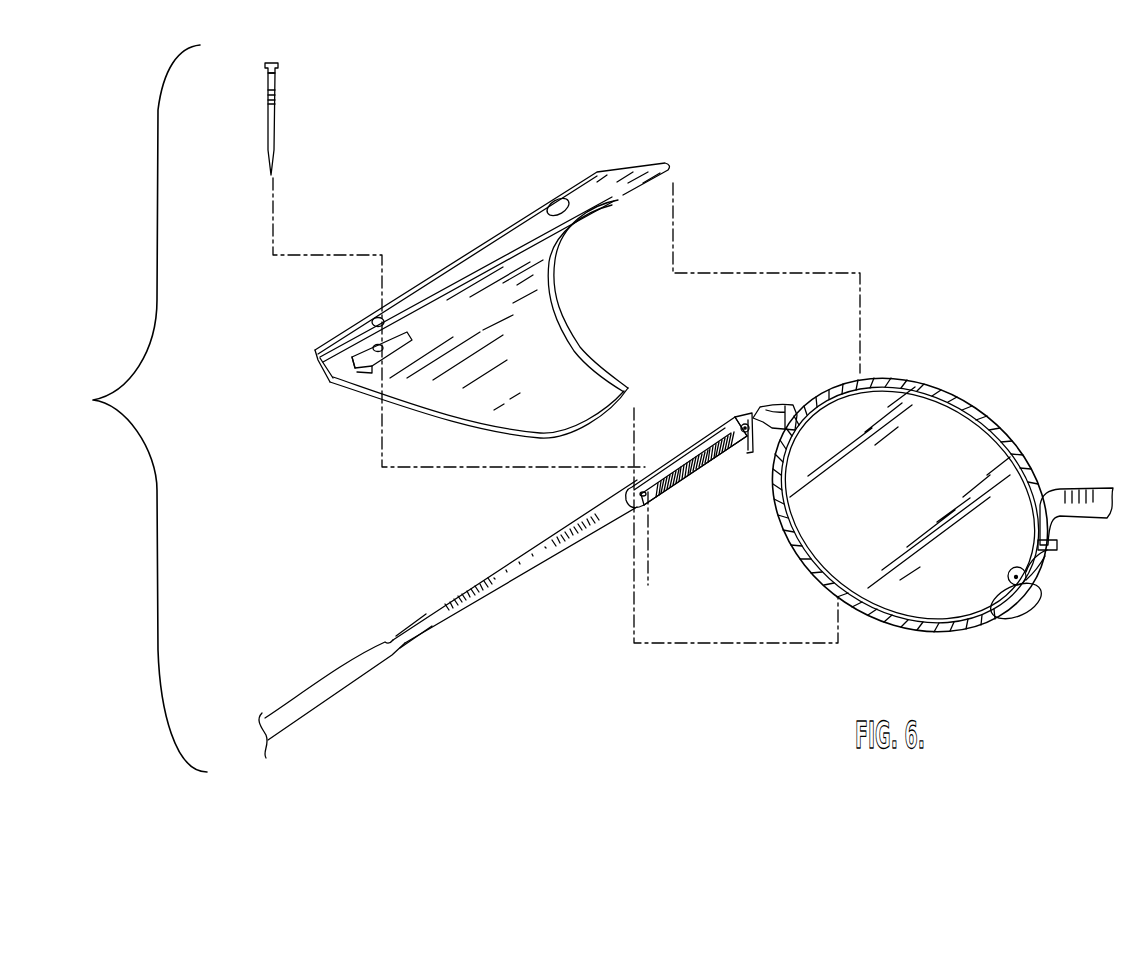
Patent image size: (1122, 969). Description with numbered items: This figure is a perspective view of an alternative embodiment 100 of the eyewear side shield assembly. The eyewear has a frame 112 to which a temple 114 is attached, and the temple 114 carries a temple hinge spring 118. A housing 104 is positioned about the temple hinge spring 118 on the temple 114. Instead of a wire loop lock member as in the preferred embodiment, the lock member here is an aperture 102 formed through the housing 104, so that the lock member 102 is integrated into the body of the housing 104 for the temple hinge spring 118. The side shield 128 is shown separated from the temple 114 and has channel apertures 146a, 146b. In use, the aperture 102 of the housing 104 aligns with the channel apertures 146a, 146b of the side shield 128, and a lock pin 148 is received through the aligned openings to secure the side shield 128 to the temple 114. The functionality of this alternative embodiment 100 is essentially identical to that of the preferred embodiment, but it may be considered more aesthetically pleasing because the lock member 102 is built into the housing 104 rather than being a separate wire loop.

The alternative embodiment 100 is at (720, 237).
The aperture 102 is at (647, 467).
The housing 104 is at (703, 472).
The frame 112 is at (915, 390).
The temple 114 is at (527, 560).
The temple hinge spring 118 is at (717, 427).
The side shield 128 is at (510, 227).
The channel aperture 146a is at (380, 318).
The channel aperture 146b is at (366, 368).
The lock pin 148 is at (277, 130).